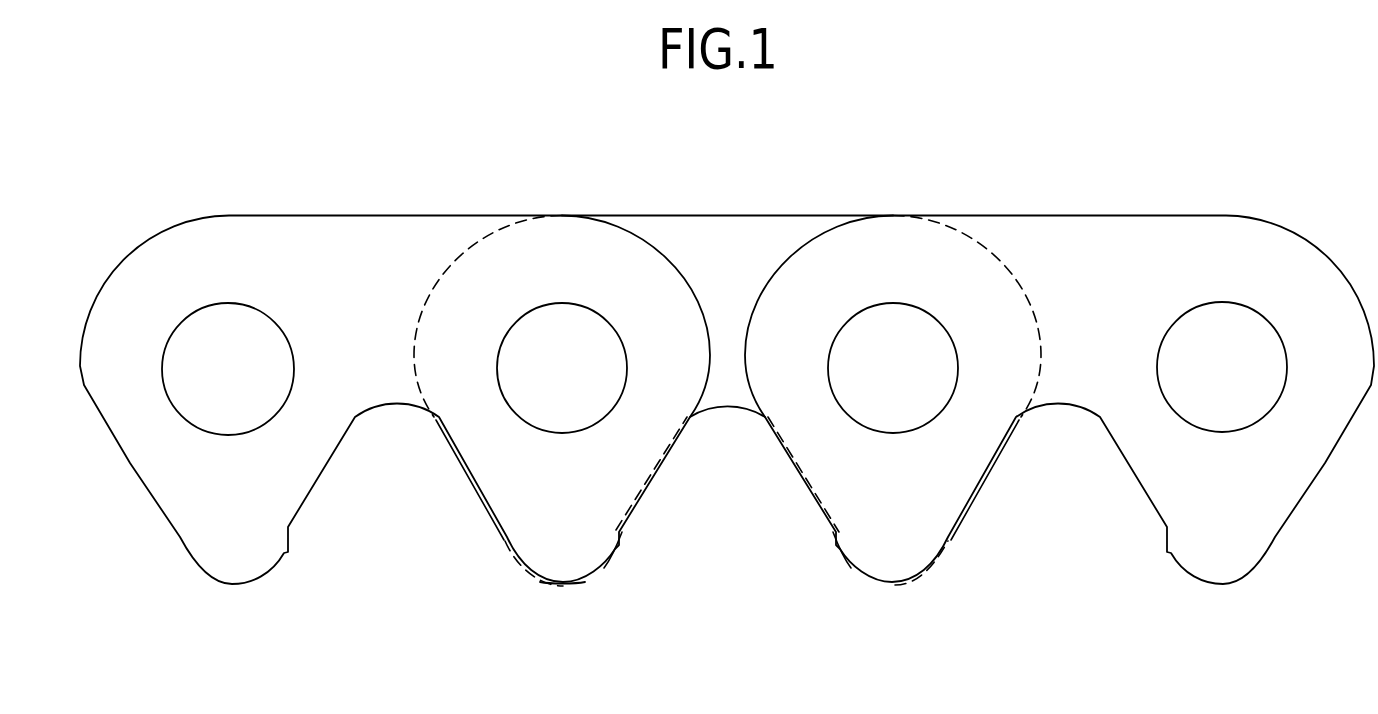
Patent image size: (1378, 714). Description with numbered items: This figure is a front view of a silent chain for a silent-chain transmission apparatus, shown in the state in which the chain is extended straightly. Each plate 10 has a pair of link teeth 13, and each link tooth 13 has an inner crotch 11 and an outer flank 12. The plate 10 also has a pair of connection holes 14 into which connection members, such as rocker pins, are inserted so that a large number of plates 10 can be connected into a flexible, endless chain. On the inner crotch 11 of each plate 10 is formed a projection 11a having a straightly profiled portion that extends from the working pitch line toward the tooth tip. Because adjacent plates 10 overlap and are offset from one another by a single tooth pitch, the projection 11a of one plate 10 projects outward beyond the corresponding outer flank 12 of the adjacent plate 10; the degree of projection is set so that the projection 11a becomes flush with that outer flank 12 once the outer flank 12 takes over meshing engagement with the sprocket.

The plate 10 is at (365, 211).
The inner crotch 11 is at (624, 497).
The projection 11a is at (286, 556).
The outer flank 12 is at (660, 467).
The link tooth 13 is at (568, 562).
The connection hole 14 is at (277, 323).